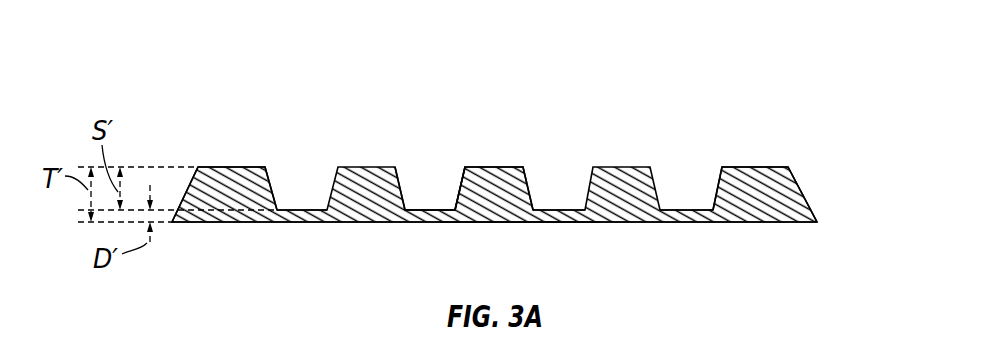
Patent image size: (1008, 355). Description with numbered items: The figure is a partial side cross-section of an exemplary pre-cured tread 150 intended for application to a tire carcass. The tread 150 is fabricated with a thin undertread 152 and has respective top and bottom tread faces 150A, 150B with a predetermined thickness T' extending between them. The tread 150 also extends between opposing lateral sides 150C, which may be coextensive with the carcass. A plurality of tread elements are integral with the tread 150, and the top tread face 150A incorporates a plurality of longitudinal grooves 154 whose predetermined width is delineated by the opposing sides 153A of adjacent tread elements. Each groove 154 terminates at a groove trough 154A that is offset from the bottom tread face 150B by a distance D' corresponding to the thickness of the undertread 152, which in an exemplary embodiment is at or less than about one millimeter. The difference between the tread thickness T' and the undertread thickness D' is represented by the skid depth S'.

The pre-cured tread 150 is at (126, 44).
The top tread face 150A is at (494, 166).
The bottom tread face 150B is at (515, 223).
The lateral sides 150C is at (230, 166).
The undertread 152 is at (304, 223).
The opposing sides of adjacent tread elements 153A is at (466, 168).
The longitudinal grooves 154 is at (321, 200).
The groove trough 154A is at (432, 223).